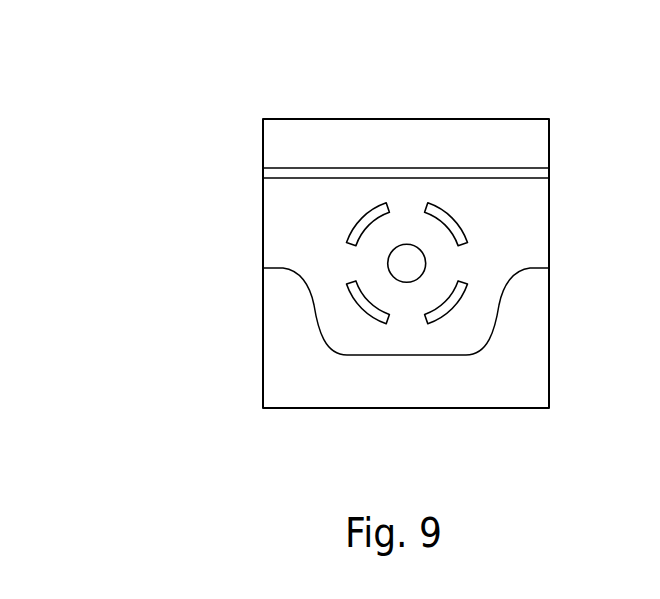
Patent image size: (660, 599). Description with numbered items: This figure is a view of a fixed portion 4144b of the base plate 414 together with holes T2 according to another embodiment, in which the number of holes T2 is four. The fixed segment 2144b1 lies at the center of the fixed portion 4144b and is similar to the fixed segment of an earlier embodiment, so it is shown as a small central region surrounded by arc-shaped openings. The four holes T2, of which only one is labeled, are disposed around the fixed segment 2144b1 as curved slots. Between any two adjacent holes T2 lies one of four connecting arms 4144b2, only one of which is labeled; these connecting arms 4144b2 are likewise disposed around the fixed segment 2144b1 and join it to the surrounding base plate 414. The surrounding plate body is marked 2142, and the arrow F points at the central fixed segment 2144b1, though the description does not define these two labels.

The base plate 414 is at (219, 61).
The plate body 2142 is at (530, 215).
The fixed portion 4144b is at (156, 199).
The fixed segment 2144b1 is at (387, 236).
The connecting arm 4144b2 is at (350, 264).
The hole T2 is at (442, 209).
The force applying point / central hole F is at (408, 262).